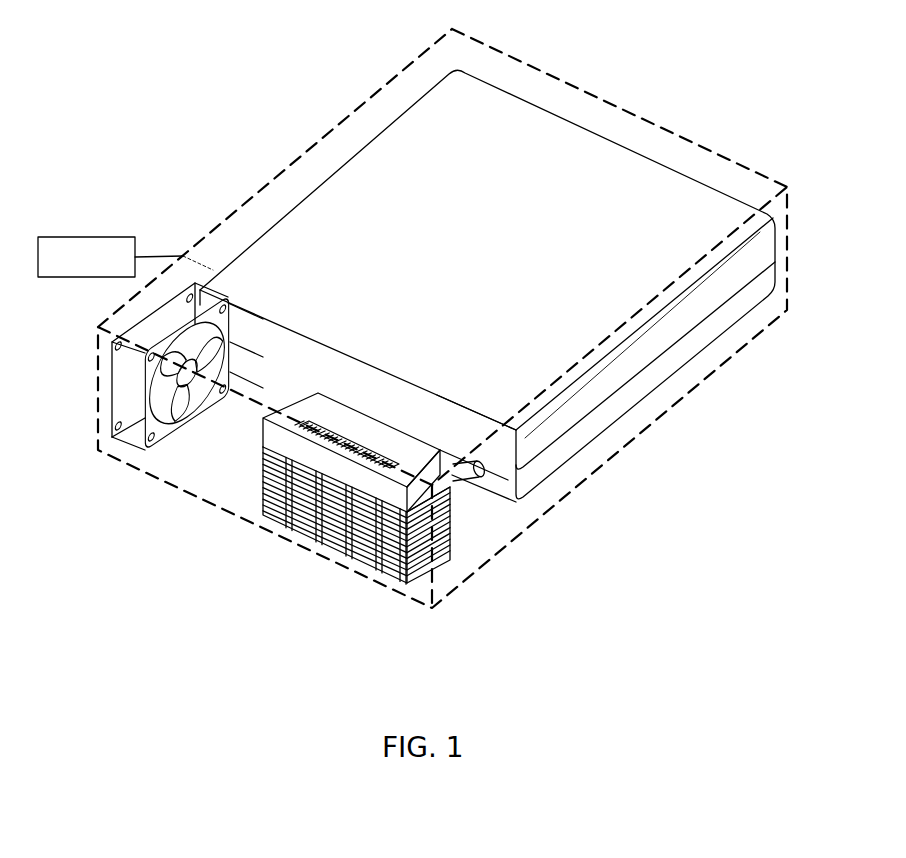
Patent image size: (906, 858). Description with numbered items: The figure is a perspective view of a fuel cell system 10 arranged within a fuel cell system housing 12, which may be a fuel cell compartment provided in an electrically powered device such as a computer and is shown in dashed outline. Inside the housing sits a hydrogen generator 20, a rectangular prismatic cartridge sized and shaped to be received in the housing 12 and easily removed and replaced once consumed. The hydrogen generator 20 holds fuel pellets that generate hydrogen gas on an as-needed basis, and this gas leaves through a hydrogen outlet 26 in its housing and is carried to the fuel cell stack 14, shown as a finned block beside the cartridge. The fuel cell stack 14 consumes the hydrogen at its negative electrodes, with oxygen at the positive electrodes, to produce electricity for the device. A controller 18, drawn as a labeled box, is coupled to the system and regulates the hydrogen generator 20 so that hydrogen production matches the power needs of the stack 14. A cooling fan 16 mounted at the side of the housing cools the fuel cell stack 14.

The fuel cell system 10 is at (265, 73).
The fuel cell system housing 12 is at (660, 125).
The fuel cell stack 14 is at (438, 563).
The cooling fan 16 is at (135, 387).
The controller 18 is at (112, 237).
The hydrogen generator 20 is at (510, 90).
The hydrogen outlet 26 is at (460, 482).